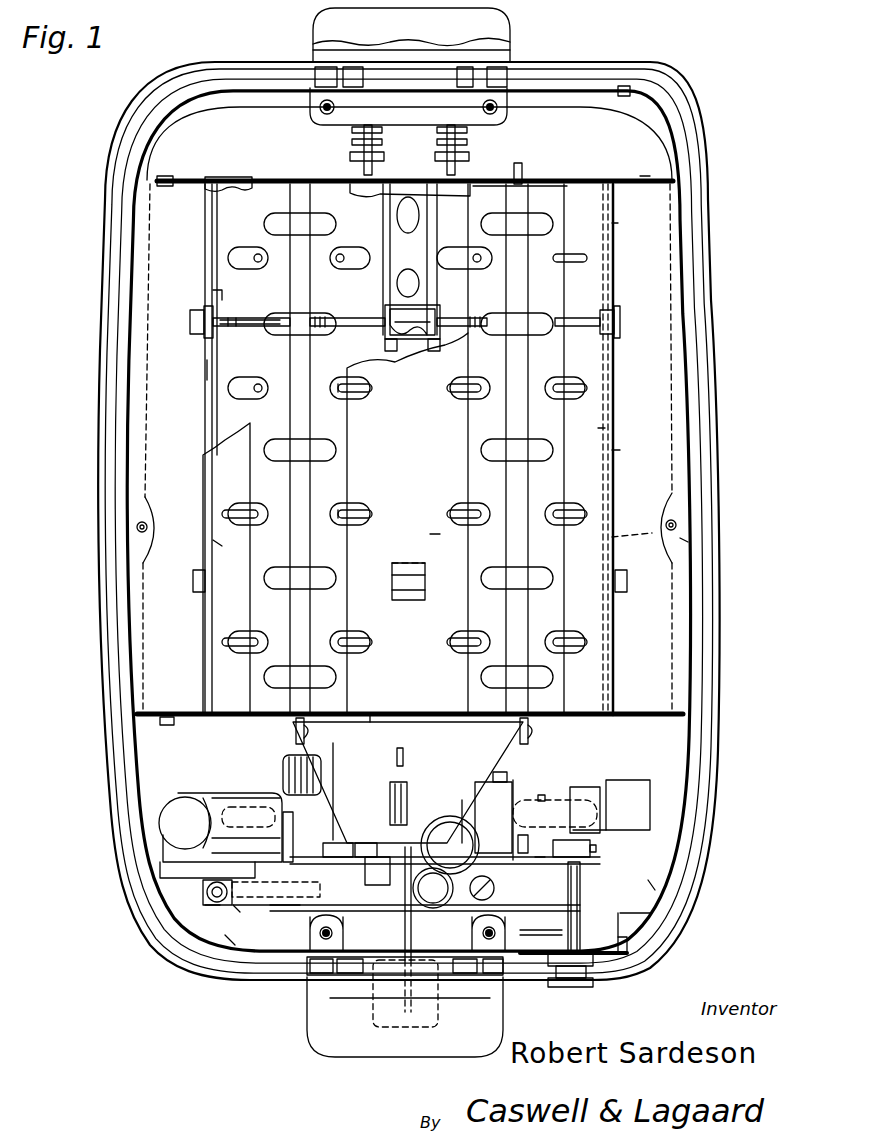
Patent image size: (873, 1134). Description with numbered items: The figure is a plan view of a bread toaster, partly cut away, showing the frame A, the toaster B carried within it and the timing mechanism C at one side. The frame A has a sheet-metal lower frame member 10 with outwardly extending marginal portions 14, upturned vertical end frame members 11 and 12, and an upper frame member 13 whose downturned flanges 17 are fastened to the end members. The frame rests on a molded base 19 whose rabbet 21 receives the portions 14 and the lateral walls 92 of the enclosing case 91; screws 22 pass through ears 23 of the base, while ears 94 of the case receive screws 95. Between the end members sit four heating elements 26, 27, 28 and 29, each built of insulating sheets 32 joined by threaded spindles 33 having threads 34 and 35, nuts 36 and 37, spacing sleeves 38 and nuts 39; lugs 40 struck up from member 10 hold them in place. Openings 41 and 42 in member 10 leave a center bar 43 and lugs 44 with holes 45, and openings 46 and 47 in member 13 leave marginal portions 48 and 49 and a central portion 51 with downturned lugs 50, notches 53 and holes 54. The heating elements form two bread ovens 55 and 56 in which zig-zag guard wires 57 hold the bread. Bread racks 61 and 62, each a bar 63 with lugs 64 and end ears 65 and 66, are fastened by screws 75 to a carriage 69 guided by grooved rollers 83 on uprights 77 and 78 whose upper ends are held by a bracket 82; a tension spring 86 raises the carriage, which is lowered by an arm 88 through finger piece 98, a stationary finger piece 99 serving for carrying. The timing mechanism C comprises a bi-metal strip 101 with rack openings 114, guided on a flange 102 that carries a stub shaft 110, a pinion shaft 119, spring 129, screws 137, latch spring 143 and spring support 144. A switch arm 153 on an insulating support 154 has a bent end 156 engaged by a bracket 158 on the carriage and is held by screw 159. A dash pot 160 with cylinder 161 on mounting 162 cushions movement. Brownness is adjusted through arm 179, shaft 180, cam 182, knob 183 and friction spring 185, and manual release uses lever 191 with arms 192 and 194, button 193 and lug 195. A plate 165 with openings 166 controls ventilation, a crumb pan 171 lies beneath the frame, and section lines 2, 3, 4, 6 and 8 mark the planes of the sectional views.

The section line 2- 2 is at (292, 0).
The section line 3- 3 is at (108, 983).
The section line 4- 4 is at (85, 808).
The section line 6- 6 is at (259, 833).
The section line 8- 8 is at (727, 641).
The lower horizontal frame member 10 is at (650, 290).
The vertical end frame member 11 is at (626, 177).
The vertical end frame member 12 is at (642, 708).
The upper horizontal frame member 13 is at (435, 534).
The marginal portions 14 is at (137, 368).
The downturned flanges 17 is at (174, 723).
The base 19 is at (683, 168).
The rabbet 21 is at (655, 135).
The screws 22 is at (147, 525).
The ears 23 is at (152, 500).
The heating element 26 is at (207, 368).
The heating element 27 is at (390, 221).
The heating element 28 is at (412, 245).
The heating element 29 is at (616, 223).
The sheets of insulating material 32 is at (614, 257).
The threaded spindles 33 is at (246, 325).
The threads 34 is at (250, 318).
The threads 35 is at (350, 318).
The nuts 36 is at (193, 328).
The nuts 37 is at (218, 295).
The sleeves 38 is at (412, 340).
The nuts 39 is at (395, 345).
The lugs 40 is at (207, 200).
The longitudinal opening 41 is at (272, 197).
The longitudinal opening 42 is at (545, 193).
The center bar 43 is at (410, 245).
The lugs 44 is at (238, 398).
The holes 45 is at (256, 254).
The longitudinal opening 46 is at (342, 481).
The longitudinal opening 47 is at (480, 478).
The marginal portion 48 is at (217, 543).
The marginal portion 49 is at (600, 428).
The lugs 50 is at (403, 563).
The central portion 51 is at (378, 676).
The notches 53 is at (350, 392).
The holes 54 is at (372, 515).
The bread oven 55 is at (324, 195).
The bread oven 56 is at (504, 190).
The guard wires 57 is at (597, 300).
The bread rack 61 is at (300, 485).
The bread rack 62 is at (573, 358).
The bar 63 is at (300, 367).
The lugs 64 is at (277, 325).
The ear 65 is at (535, 205).
The ear 66 is at (293, 729).
The carriage 69 is at (407, 883).
The screws 75 is at (290, 738).
The upright 77 is at (406, 850).
The upright 78 is at (403, 755).
The bracket 82 is at (382, 747).
The grooved rollers 83 is at (404, 800).
The tension coil spring 86 is at (482, 802).
The arm 88 is at (378, 970).
The case 91 is at (632, 86).
The lateral walls 92 is at (124, 448).
The ears 94 is at (318, 106).
The screws 95 is at (478, 106).
The finger piece 98 is at (372, 1043).
The stationary finger piece 99 is at (480, 14).
The strip of bi-metal 101 is at (633, 808).
The flange 102 is at (292, 825).
The stub shaft 110 is at (506, 775).
The openings 114 is at (543, 797).
The shaft 119 is at (262, 905).
The tension coil spring 129 is at (328, 762).
The screws 137 is at (502, 880).
The tension coil spring 143 is at (333, 830).
The spring support 144 is at (262, 895).
The leaf spring switch arm 153 is at (237, 905).
The insulating support 154 is at (200, 895).
The engaging portion 156 is at (387, 877).
The bracket 158 is at (433, 898).
The screw 159 is at (212, 905).
The dash pot 160 is at (167, 793).
The cylinder 161 is at (213, 800).
The mounting 162 is at (170, 857).
The plate 165 is at (655, 885).
The openings 166 is at (650, 915).
The crumb pan 171 is at (683, 540).
The arm 179 is at (535, 843).
The shaft 180 is at (583, 866).
The cam 182 is at (598, 787).
The knob 183 is at (562, 990).
The spring 185 is at (580, 838).
The lever 191 is at (558, 918).
The arm 192 is at (628, 945).
The button 193 is at (598, 981).
The arm 194 is at (518, 840).
The lug 195 is at (508, 817).
The frame A is at (645, 176).
The toaster B is at (617, 450).
The timing mechanism C is at (540, 857).